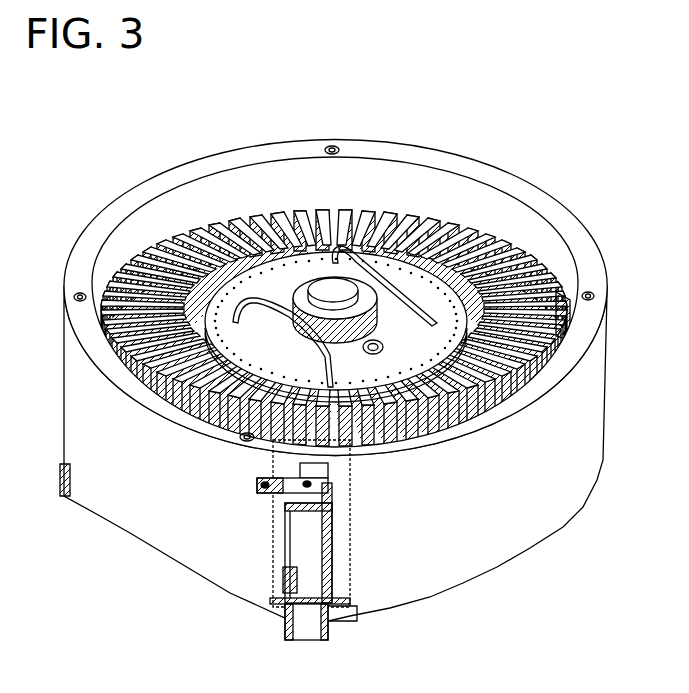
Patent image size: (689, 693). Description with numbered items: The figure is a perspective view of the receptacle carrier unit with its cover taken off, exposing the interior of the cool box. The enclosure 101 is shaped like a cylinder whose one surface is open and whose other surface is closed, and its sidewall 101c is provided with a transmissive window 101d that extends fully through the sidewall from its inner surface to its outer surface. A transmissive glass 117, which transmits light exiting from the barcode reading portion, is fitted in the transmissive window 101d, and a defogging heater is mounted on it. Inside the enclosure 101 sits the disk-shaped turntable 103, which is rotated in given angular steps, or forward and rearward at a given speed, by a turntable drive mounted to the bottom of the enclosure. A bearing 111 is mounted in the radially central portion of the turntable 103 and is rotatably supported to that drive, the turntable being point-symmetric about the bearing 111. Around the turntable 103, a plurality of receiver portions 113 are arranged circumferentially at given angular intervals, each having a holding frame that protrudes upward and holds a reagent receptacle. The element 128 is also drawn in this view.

The enclosure 101 is at (547, 519).
The sidewall 101c is at (488, 207).
The transmissive window 101d is at (270, 497).
The turntable 103 is at (495, 263).
The bearing 111 is at (378, 313).
The receiver portion 113 is at (550, 300).
The transmissive glass 117 is at (327, 474).
The connector terminal 128 is at (277, 608).